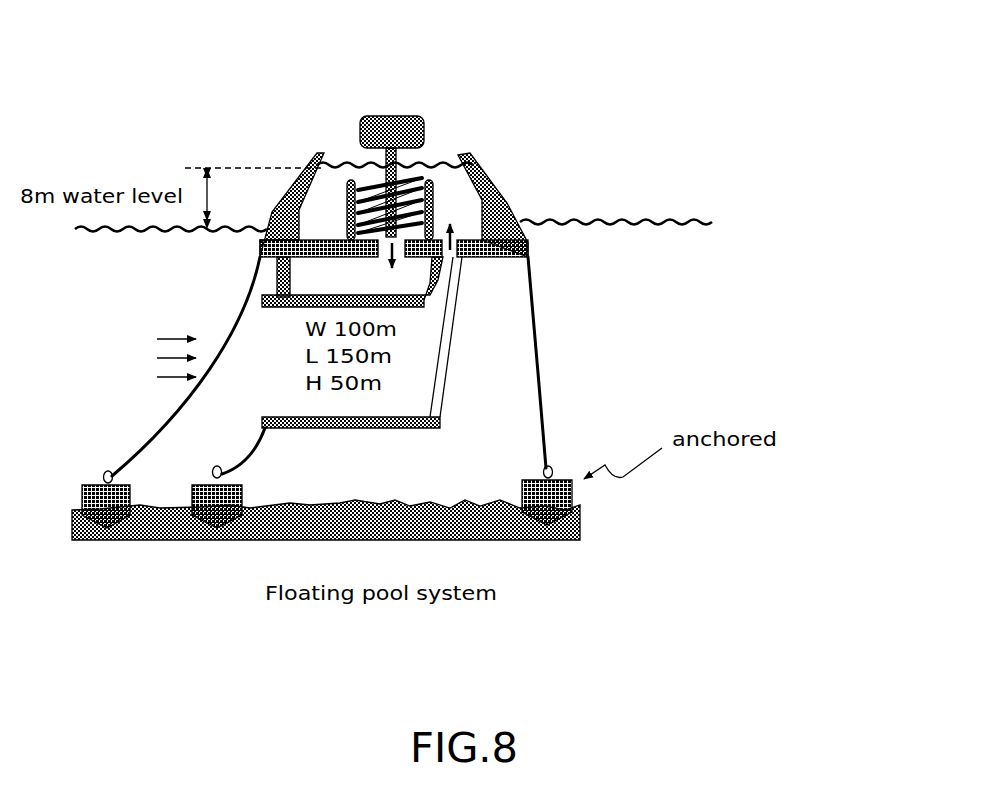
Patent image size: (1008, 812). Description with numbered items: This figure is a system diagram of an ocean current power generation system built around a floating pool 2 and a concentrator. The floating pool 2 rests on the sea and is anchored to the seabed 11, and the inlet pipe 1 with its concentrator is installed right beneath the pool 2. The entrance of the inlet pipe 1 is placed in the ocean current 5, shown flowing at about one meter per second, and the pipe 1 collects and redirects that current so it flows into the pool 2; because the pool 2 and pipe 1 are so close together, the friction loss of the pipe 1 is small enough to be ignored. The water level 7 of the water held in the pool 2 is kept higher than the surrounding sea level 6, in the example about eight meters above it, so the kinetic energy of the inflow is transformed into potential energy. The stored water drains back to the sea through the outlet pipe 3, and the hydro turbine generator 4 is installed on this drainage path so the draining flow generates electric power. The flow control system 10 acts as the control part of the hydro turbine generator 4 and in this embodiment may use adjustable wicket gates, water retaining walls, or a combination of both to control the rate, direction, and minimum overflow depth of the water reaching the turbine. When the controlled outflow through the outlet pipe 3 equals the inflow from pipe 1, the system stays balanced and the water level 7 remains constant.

The inlet pipe 1 is at (462, 329).
The floating pool 2 is at (503, 177).
The outlet pipe 3 is at (370, 260).
The hydro turbine generator 4 is at (427, 110).
The ocean current 5 is at (105, 354).
The sea level 6 is at (704, 211).
The water level 7 is at (346, 155).
The flow control system 10 is at (338, 204).
The seabed 11 is at (593, 516).